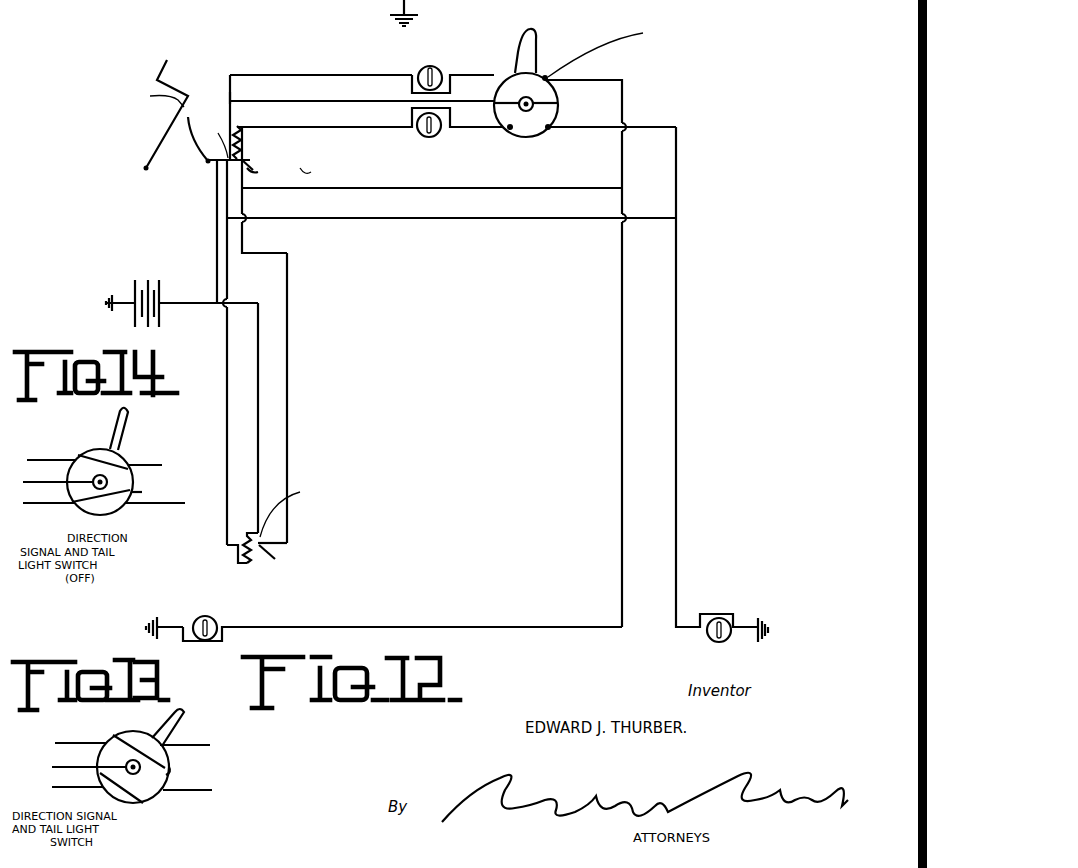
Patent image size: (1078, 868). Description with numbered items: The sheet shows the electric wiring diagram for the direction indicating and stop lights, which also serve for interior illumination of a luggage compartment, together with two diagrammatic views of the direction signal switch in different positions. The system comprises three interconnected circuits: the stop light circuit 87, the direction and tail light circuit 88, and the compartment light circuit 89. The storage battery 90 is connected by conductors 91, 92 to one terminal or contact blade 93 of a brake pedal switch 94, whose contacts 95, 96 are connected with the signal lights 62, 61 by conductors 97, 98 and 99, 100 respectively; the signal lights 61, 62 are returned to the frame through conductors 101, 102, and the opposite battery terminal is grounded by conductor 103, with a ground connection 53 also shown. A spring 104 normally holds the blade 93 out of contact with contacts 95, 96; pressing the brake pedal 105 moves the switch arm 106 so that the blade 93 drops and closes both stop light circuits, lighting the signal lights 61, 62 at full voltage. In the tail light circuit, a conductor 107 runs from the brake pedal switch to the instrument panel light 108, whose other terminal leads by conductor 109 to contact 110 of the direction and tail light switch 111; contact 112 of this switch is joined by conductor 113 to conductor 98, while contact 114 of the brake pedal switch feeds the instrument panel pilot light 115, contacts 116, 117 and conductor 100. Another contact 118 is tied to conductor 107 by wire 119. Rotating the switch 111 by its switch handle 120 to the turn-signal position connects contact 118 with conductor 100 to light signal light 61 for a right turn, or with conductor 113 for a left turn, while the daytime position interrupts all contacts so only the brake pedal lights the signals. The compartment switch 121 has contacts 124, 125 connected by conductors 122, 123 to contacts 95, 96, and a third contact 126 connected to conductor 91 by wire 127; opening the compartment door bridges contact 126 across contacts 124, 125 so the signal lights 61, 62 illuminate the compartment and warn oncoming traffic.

In FIG. 12, the ground connection 53 is at (404, 4).
In FIG. 12, the signal light 61 is at (718, 642).
In FIG. 12, the signal light 62 is at (212, 618).
In FIG. 12, the stop light circuit 87 is at (655, 344).
In FIG. 12, the direction and tail light circuit 88 is at (305, 91).
In FIG. 12, the compartment light circuit 89 is at (273, 360).
In FIG. 12, the storage battery 90 is at (152, 282).
In FIG. 12, the conductor 91 is at (183, 300).
In FIG. 12, the conductor 92 is at (216, 213).
In FIG. 12, the contact blade 93 is at (256, 162).
In FIG. 12, the brake pedal switch 94 is at (216, 165).
In FIG. 12, the switch contact 95 is at (250, 172).
In FIG. 12, the switch contact 96 is at (218, 178).
In FIG. 12, the conductor 97 is at (501, 188).
In FIG. 12, the conductor 98 is at (621, 478).
In FIG. 12, the conductor 99 is at (472, 218).
In FIG. 12, the conductor 100 is at (680, 510).
In FIG. 14, the conductor 100 is at (162, 503).
In FIG. 13, the conductor 100 is at (205, 790).
In FIG. 12, the conductor 101 is at (745, 628).
In FIG. 12, the conductor 102 is at (168, 627).
In FIG. 12, the conductor 103 is at (118, 302).
In FIG. 12, the spring 104 is at (240, 121).
In FIG. 12, the brake pedal 105 is at (175, 110).
In FIG. 12, the switch arm 106 is at (180, 145).
In FIG. 12, the conductor 107 is at (228, 97).
In FIG. 12, the instrument panel light 108 is at (431, 66).
In FIG. 12, the conductor 109 is at (472, 75).
In FIG. 12, the contact 110 is at (518, 39).
In FIG. 12, the direction and tail light switch 111 is at (546, 90).
In FIG. 14, the direction and tail light switch 111 is at (140, 481).
In FIG. 13, the direction and tail light switch 111 is at (117, 745).
In FIG. 12, the contact 112 is at (553, 70).
In FIG. 12, the conductor 113 is at (622, 161).
In FIG. 14, the conductor 113 is at (162, 465).
In FIG. 13, the conductor 113 is at (210, 745).
In FIG. 12, the contact 114 is at (243, 158).
In FIG. 12, the instrument panel pilot light 115 is at (430, 136).
In FIG. 12, the contact 116 is at (510, 129).
In FIG. 12, the contact 117 is at (552, 118).
In FIG. 12, the contact 118 is at (558, 102).
In FIG. 14, the contact 118 is at (142, 492).
In FIG. 13, the contact 118 is at (170, 777).
In FIG. 12, the wire 119 is at (373, 105).
In FIG. 14, the wire 119 is at (40, 484).
In FIG. 13, the wire 119 is at (62, 767).
In FIG. 12, the switch handle 120 is at (533, 34).
In FIG. 14, the switch handle 120 is at (123, 427).
In FIG. 13, the switch handle 120 is at (183, 712).
In FIG. 12, the compartment switch 121 is at (263, 548).
In FIG. 12, the conductor 122 is at (290, 318).
In FIG. 12, the conductor 123 is at (225, 335).
In FIG. 12, the contact 124 is at (266, 552).
In FIG. 12, the contact 125 is at (240, 560).
In FIG. 12, the contact 126 is at (262, 535).
In FIG. 12, the wire 127 is at (260, 452).